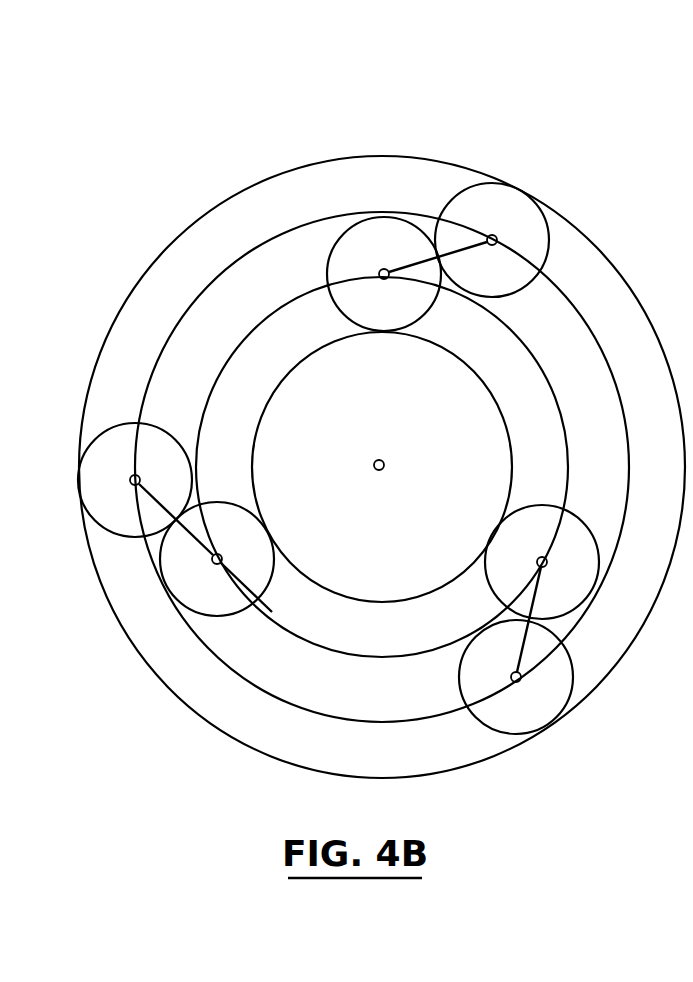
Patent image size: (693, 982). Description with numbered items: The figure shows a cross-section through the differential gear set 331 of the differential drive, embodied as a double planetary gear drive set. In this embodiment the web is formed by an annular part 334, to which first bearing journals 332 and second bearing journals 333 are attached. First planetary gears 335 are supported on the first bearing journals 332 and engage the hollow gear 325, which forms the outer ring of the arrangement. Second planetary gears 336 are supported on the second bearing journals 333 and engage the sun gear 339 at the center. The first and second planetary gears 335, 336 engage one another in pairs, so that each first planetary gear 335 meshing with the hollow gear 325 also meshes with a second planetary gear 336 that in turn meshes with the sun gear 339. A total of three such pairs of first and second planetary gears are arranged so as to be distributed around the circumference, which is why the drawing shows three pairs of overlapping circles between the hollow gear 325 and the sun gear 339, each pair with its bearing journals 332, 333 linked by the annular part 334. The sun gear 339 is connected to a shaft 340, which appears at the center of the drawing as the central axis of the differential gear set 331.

The hollow gear 325 is at (625, 273).
The differential gear set 331 is at (446, 117).
The first bearing journals 332 is at (496, 235).
The second bearing journals 333 is at (382, 263).
The annular part 334 is at (455, 243).
The first planetary gears 335 is at (547, 218).
The second planetary gears 336 is at (350, 235).
The sun gear 339 is at (448, 350).
The shaft 340 is at (384, 472).